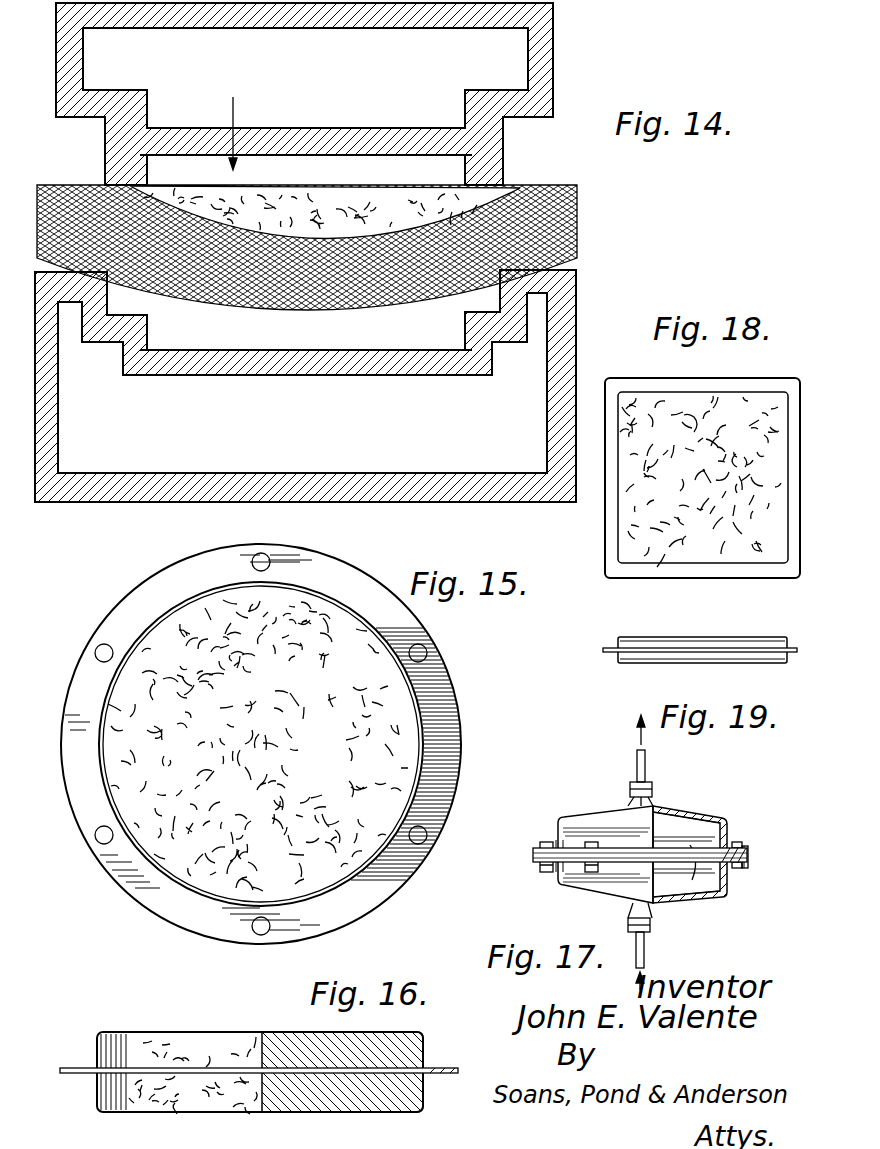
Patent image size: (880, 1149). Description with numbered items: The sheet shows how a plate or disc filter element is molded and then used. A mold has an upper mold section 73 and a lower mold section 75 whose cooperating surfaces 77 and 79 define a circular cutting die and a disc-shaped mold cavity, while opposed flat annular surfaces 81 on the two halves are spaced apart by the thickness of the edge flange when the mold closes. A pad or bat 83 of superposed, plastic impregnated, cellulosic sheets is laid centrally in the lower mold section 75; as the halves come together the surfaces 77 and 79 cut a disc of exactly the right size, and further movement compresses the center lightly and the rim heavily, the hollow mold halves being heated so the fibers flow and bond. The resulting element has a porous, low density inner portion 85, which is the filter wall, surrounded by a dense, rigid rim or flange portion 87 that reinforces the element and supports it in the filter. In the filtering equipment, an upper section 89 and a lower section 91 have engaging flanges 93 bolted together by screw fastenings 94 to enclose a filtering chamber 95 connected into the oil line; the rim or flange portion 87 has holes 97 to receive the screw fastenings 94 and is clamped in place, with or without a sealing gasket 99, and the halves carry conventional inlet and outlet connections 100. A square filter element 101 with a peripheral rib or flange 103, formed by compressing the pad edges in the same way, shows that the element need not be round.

In FIG. 14, the upper mold section 73 is at (555, 22).
In FIG. 14, the lower mold section 75 is at (578, 340).
In FIG. 14, the cooperating surface 77 is at (103, 156).
In FIG. 14, the cooperating surface 79 is at (108, 292).
In FIG. 14, the flat annular surfaces 81 is at (145, 190).
In FIG. 14, the pad or bat 83 is at (577, 223).
In FIG. 15, the inner portion 85 is at (393, 688).
In FIG. 16, the inner portion 85 is at (176, 1040).
In FIG. 17, the inner portion 85 is at (706, 842).
In FIG. 15, the rim or flange portion 87 is at (120, 614).
In FIG. 16, the rim or flange portion 87 is at (188, 1075).
In FIG. 17, the rim or flange portion 87 is at (533, 856).
In FIG. 17, the upper section 89 is at (672, 808).
In FIG. 17, the lower section 91 is at (610, 893).
In FIG. 17, the engaging flanges 93 is at (567, 840).
In FIG. 17, the screw fastenings 94 is at (596, 842).
In FIG. 17, the filtering chamber 95 is at (697, 814).
In FIG. 15, the holes 97 is at (95, 658).
In FIG. 17, the sealing gasket 99 is at (541, 847).
In FIG. 17, the inlet and outlet connections 100 is at (652, 786).
In FIG. 18, the square filter element 101 is at (707, 408).
In FIG. 19, the square filter element 101 is at (698, 640).
In FIG. 18, the peripheral rib or flange 103 is at (775, 386).
In FIG. 19, the peripheral rib or flange 103 is at (758, 648).